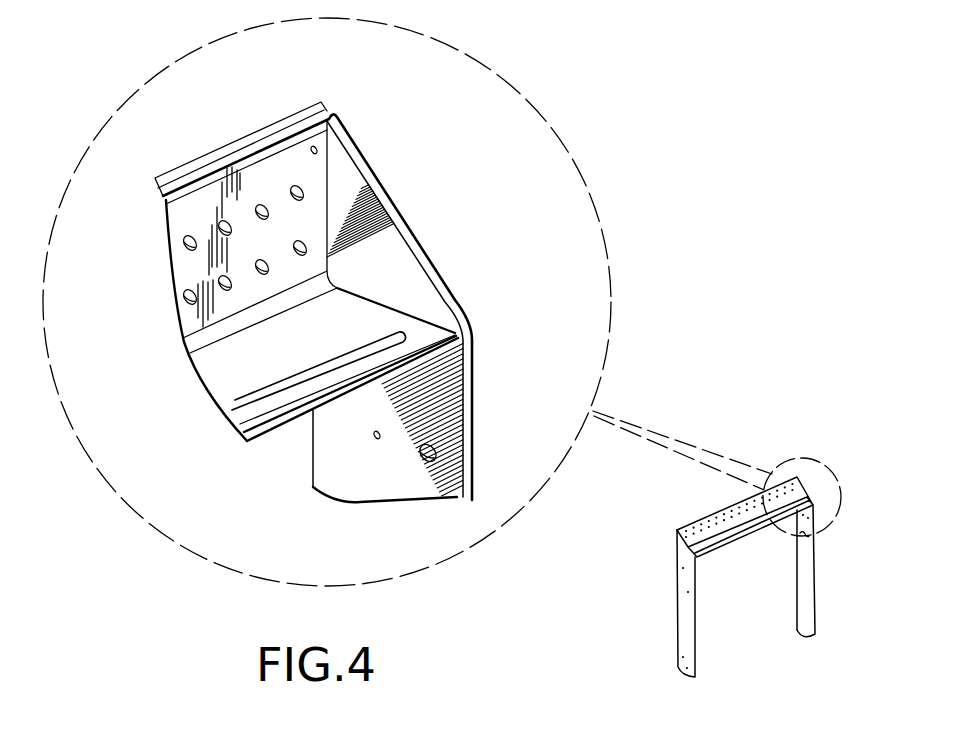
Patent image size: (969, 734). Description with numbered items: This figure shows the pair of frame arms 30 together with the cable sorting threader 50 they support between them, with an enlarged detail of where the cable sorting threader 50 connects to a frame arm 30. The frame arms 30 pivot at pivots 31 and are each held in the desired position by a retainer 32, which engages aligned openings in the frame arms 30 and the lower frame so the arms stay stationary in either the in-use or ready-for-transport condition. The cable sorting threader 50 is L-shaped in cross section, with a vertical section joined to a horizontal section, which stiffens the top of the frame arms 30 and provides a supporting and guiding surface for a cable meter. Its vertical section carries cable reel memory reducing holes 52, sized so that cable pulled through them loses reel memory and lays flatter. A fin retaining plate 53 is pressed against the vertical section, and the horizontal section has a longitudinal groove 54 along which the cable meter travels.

The frame arms 30 is at (466, 432).
The pivots 31 is at (805, 618).
The retainer 32 is at (805, 602).
The cable sorting threader 50 is at (391, 305).
The cable reel memory reducing holes 52 is at (261, 207).
The fin retaining plate 53 is at (303, 110).
The longitudinal groove 54 is at (231, 403).